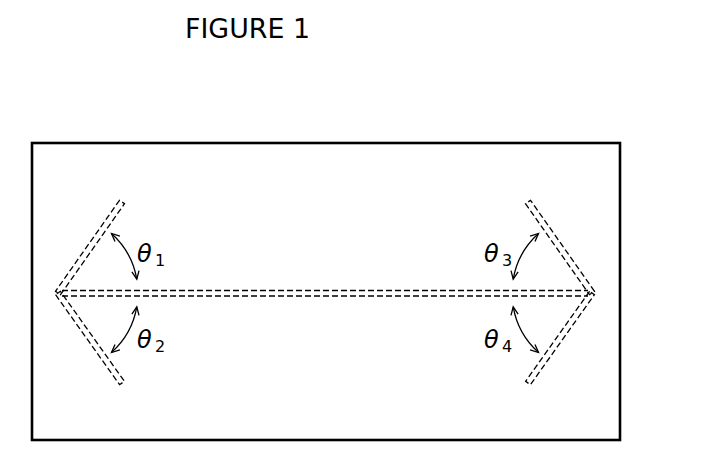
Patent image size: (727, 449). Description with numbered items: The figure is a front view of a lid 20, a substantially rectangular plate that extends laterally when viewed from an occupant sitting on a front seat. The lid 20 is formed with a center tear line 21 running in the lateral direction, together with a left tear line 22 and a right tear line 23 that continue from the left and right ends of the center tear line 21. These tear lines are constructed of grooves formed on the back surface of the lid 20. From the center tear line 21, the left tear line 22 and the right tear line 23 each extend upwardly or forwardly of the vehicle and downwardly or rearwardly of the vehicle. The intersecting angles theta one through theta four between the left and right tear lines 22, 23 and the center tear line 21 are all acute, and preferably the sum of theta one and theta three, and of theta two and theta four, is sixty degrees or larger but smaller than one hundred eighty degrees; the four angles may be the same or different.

The lid 20 is at (457, 165).
The center tear line 21 is at (326, 288).
The left tear line 22 is at (97, 243).
The right tear line 23 is at (549, 232).